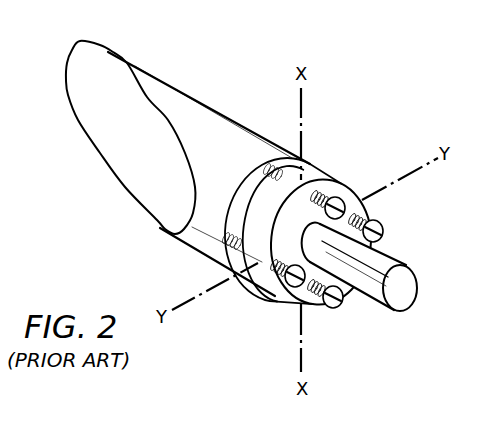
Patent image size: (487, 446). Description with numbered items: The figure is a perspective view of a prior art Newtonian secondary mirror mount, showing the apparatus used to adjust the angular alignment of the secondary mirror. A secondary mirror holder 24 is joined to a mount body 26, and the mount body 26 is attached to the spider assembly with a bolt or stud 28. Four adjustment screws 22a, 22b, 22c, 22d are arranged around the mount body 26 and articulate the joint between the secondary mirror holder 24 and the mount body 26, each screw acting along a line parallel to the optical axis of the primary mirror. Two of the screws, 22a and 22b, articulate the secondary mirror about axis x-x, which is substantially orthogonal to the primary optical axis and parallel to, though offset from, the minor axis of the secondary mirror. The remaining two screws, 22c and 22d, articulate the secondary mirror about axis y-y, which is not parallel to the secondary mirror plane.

The secondary mirror holder 24 is at (204, 123).
The mount body 26 is at (277, 203).
The bolt or stud 28 is at (403, 263).
The adjustment screw 22a is at (287, 284).
The adjustment screw 22b is at (386, 234).
The adjustment screw 22c is at (346, 202).
The adjustment screw 22d is at (345, 308).